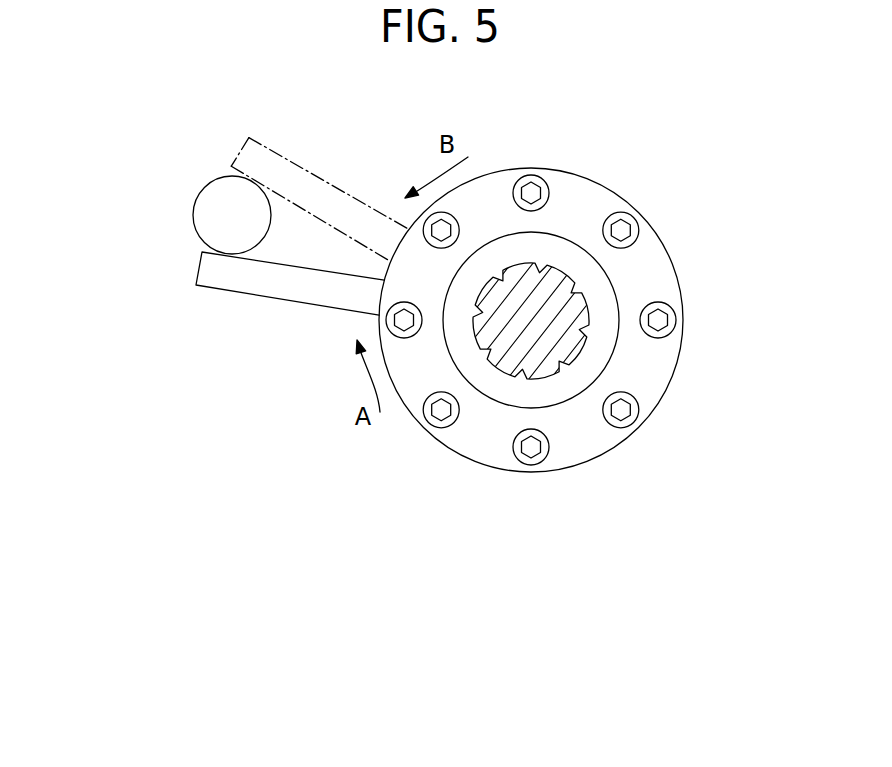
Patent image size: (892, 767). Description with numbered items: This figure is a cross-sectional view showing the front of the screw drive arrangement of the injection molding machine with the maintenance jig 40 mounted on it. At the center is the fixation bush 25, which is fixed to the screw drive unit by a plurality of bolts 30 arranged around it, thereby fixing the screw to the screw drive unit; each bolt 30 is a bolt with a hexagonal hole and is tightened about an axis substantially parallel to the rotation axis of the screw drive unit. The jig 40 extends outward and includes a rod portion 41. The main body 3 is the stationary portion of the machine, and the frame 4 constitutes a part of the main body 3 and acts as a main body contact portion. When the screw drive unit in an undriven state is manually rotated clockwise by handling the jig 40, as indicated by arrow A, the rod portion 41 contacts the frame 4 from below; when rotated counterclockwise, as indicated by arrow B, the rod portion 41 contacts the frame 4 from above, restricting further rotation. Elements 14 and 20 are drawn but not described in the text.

The main body 3 is at (184, 203).
The frame 4 is at (193, 218).
The shaft 14 is at (570, 302).
The flange 20 is at (610, 180).
The fixation bush 25 is at (662, 280).
The bolt 30 is at (517, 183).
The maintenance jig 40 is at (237, 305).
The rod portion 41 is at (310, 305).